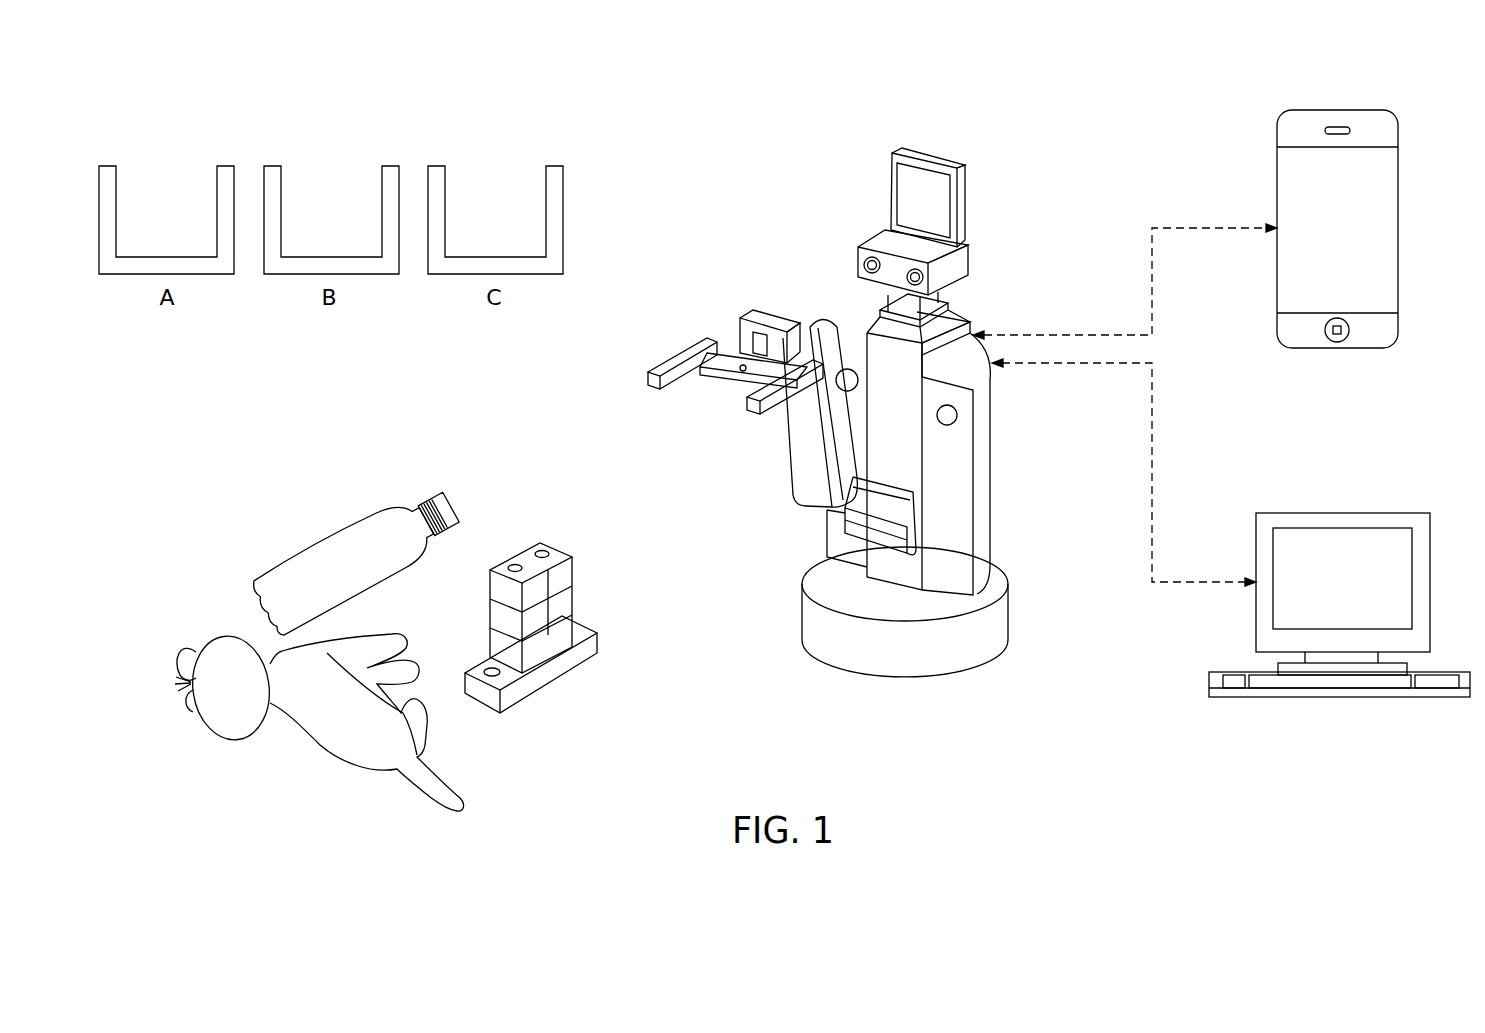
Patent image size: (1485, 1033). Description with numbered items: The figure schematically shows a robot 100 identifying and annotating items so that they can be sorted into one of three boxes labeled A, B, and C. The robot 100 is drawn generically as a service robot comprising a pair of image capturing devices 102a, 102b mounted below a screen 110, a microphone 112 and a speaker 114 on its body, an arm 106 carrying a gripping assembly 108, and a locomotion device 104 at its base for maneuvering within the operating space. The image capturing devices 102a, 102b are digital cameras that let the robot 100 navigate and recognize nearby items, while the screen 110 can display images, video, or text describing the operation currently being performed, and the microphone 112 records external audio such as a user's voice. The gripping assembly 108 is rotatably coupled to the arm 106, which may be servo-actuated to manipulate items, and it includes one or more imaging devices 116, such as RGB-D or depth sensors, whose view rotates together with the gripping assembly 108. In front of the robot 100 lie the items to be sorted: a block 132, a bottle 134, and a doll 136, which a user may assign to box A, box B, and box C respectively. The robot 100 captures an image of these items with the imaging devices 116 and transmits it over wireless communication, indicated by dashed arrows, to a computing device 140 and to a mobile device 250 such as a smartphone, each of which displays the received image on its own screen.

The robot 100 is at (868, 412).
The image capturing device 102a is at (925, 279).
The image capturing device 102b is at (862, 264).
The locomotion device 104 is at (800, 612).
The arm 106 is at (792, 318).
The gripping assembly 108 is at (660, 372).
The screen 110 is at (893, 186).
The microphone 112 is at (848, 369).
The speaker 114 is at (958, 415).
The imaging device 116 is at (741, 370).
The block 132 is at (555, 548).
The bottle 134 is at (448, 498).
The doll 136 is at (215, 637).
The computing device 140 is at (1340, 513).
The mobile device 250 is at (1338, 110).